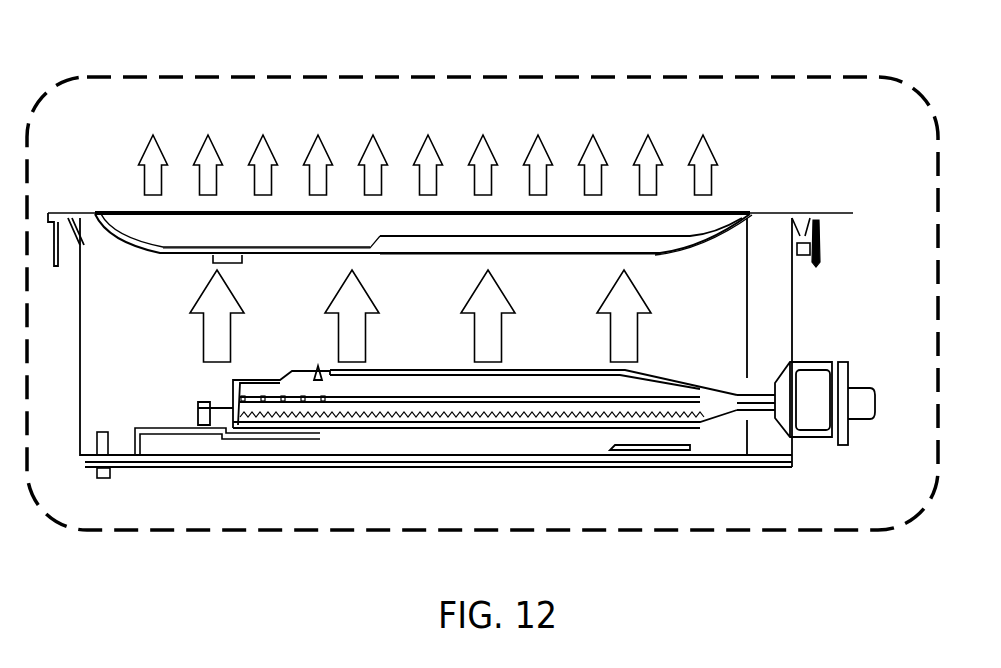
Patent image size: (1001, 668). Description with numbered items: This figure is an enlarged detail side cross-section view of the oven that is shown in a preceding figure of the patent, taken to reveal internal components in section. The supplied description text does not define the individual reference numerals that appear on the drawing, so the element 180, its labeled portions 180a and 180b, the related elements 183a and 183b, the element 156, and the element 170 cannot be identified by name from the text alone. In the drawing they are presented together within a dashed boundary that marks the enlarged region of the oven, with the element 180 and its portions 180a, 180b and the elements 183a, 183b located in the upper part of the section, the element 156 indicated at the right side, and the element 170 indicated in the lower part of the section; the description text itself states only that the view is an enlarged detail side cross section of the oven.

The heat plate 180 is at (113, 208).
The first portion of heat plate 180a is at (344, 214).
The second portion of heat plate 180b is at (511, 236).
The tab 183a is at (240, 235).
The lower surface 183b is at (495, 248).
The flange 156 is at (698, 244).
The burner 170 is at (544, 430).